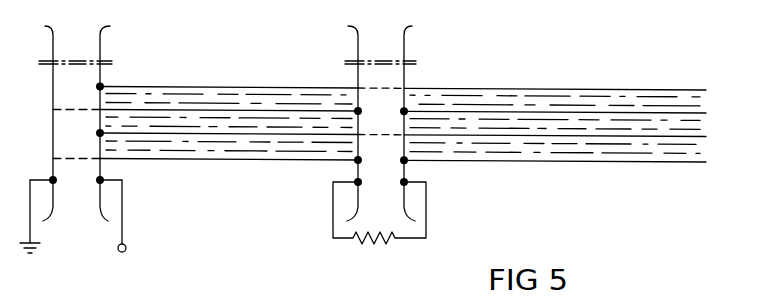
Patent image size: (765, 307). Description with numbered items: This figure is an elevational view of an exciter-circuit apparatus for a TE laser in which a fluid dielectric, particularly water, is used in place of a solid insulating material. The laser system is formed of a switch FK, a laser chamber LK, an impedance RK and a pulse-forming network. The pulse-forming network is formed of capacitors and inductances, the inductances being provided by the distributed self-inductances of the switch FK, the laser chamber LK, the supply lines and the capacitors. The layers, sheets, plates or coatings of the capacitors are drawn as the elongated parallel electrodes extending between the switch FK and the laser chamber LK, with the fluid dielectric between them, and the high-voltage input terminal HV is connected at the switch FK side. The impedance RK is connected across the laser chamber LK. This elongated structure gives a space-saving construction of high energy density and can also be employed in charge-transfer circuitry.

The switch FK is at (75, 113).
The laser chamber LK is at (380, 113).
The high-voltage input terminal HV is at (116, 231).
The impedance RK is at (373, 247).